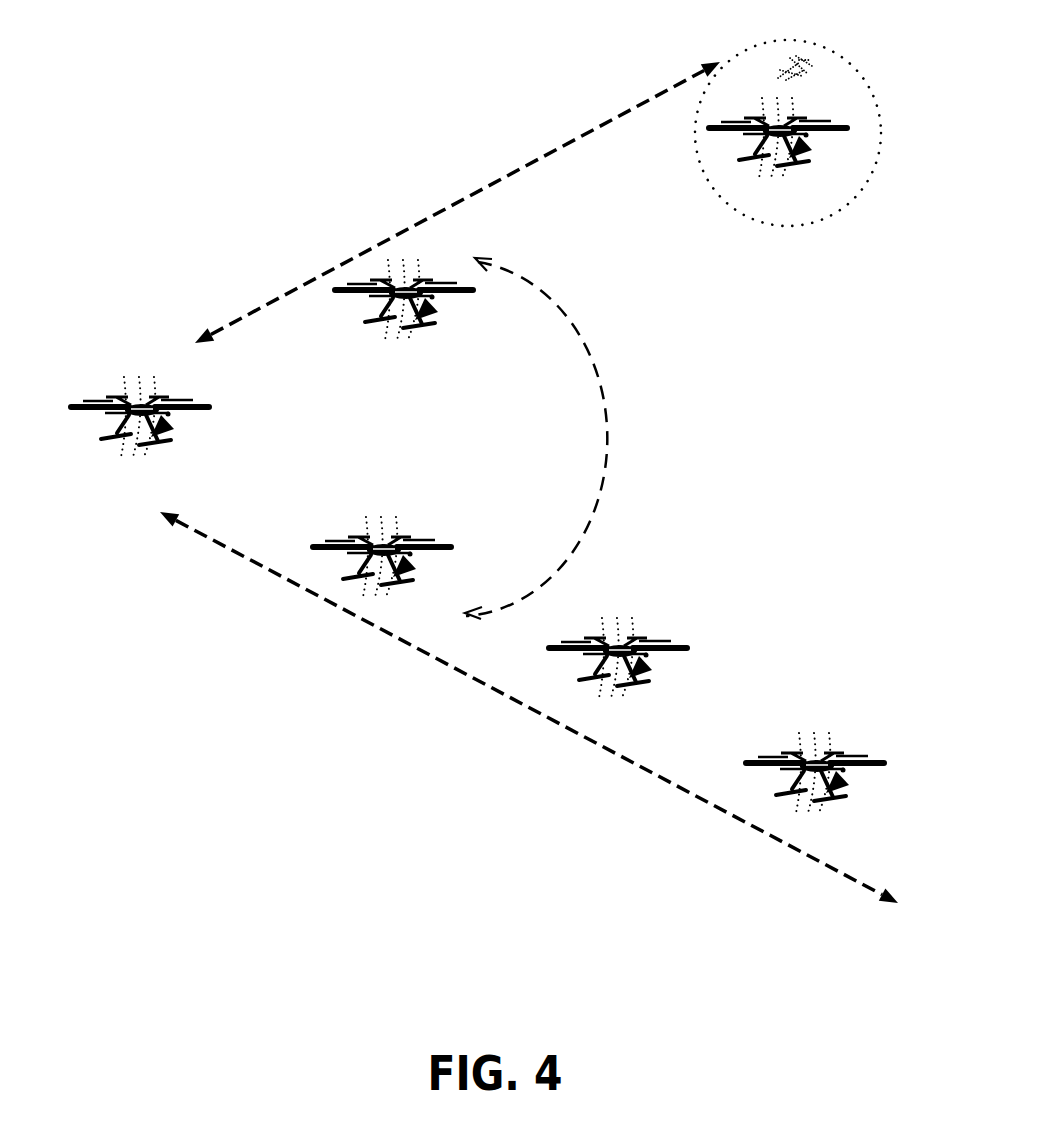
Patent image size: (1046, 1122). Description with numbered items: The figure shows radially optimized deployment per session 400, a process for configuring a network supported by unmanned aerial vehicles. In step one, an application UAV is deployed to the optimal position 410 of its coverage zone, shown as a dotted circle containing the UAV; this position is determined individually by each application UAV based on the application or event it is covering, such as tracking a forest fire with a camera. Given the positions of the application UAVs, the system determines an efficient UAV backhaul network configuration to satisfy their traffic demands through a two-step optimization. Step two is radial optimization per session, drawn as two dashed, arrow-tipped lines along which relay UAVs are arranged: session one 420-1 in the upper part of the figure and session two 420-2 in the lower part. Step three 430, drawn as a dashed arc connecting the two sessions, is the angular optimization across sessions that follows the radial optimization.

The radially optimized deployment per session 400 is at (498, 451).
The optimal position 410 is at (727, 202).
The radial optimization per session (session one) 420-1 is at (455, 207).
The radial optimization per session (session two) 420-2 is at (527, 707).
The angular optimization across sessions 430 is at (618, 422).